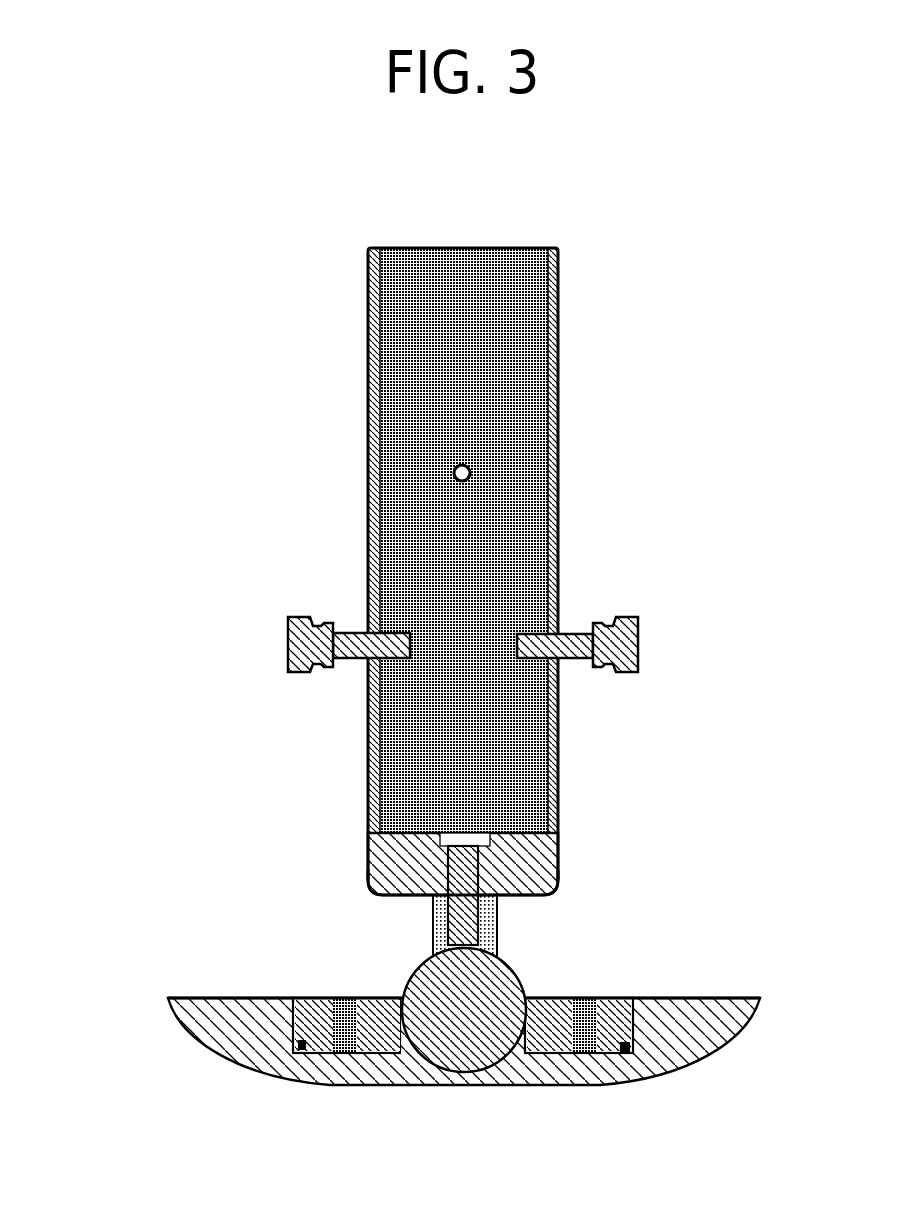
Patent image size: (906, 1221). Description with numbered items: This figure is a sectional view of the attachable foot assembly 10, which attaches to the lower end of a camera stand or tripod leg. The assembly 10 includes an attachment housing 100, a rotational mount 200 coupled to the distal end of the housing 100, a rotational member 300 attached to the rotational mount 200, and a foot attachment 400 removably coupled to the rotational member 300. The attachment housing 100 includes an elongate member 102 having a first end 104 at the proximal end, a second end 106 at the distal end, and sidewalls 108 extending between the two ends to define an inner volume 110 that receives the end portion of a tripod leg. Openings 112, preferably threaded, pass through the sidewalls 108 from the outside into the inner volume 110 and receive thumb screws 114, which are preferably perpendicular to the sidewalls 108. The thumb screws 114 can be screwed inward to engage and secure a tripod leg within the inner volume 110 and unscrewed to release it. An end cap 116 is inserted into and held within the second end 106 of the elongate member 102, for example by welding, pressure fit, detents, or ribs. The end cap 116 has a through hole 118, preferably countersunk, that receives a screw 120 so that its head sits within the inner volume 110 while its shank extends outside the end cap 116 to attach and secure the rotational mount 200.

The attachable foot assembly 10 is at (409, 580).
The attachment housing 100 is at (434, 550).
The elongate member 102 is at (477, 550).
The first end 104 is at (510, 248).
The second end 106 is at (348, 899).
The sidewalls 108 is at (560, 358).
The inner volume 110 is at (463, 351).
The openings 112 is at (569, 614).
The thumb screws 114 is at (640, 648).
The end cap 116 is at (520, 898).
The through hole 118 is at (486, 815).
The screw 120 is at (440, 870).
The rotational mount 200 is at (339, 955).
The rotational member 300 is at (409, 992).
The foot attachment 400 is at (128, 1013).